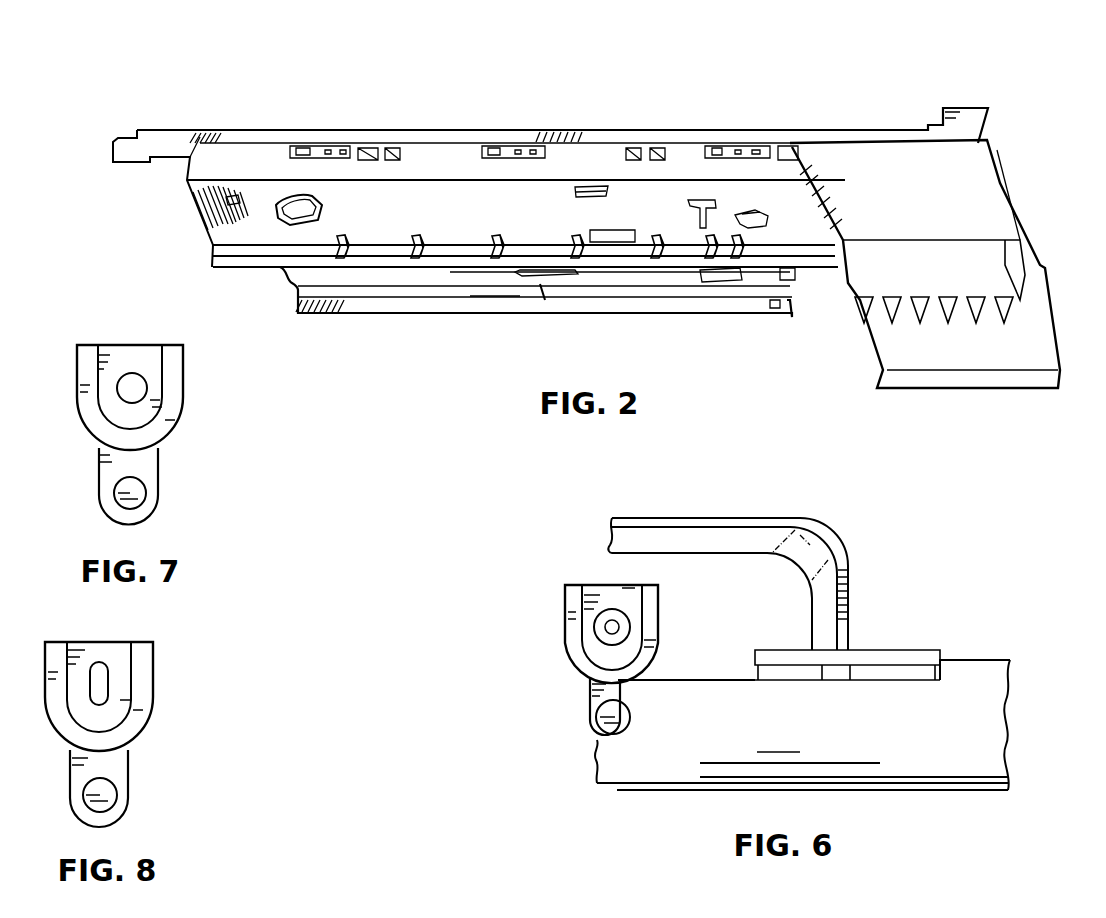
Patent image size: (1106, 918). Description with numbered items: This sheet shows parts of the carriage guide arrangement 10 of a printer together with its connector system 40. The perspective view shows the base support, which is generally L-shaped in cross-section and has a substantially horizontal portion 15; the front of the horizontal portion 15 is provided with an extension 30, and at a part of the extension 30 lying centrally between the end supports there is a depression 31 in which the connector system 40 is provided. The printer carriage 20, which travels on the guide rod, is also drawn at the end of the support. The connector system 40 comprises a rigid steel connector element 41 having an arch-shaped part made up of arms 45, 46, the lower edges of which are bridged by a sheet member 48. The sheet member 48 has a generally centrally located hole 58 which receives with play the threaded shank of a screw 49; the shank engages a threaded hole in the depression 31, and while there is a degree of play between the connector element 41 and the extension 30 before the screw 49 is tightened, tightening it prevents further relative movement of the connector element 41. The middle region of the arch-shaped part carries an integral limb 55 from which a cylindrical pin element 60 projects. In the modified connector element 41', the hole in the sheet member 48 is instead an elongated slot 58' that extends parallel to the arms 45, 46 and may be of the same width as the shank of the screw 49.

In FIG. 2, the carriage guide arrangement 10 is at (746, 102).
In FIG. 2, the horizontal portion 15 is at (433, 195).
In FIG. 2, the printer carriage 20 is at (1000, 185).
In FIG. 2, the extension 30 is at (384, 283).
In FIG. 2, the depression 31 is at (543, 278).
In FIG. 6, the connector system 40 is at (573, 757).
In FIG. 7, the connector element 41 is at (173, 435).
In FIG. 8, the modified connector element 41' is at (83, 702).
In FIG. 6, the arm 45 is at (568, 628).
In FIG. 6, the arm 46 is at (660, 630).
In FIG. 6, the sheet member 48 is at (600, 592).
In FIG. 6, the screw 49 is at (628, 625).
In FIG. 6, the integral limb 55 is at (592, 697).
In FIG. 7, the hole 58 is at (177, 378).
In FIG. 8, the elongated slot 58' is at (149, 683).
In FIG. 7, the cylindrical pin element 60 is at (143, 492).
In FIG. 8, the cylindrical pin element 60 is at (105, 791).
In FIG. 6, the cylindrical pin element 60 is at (605, 718).